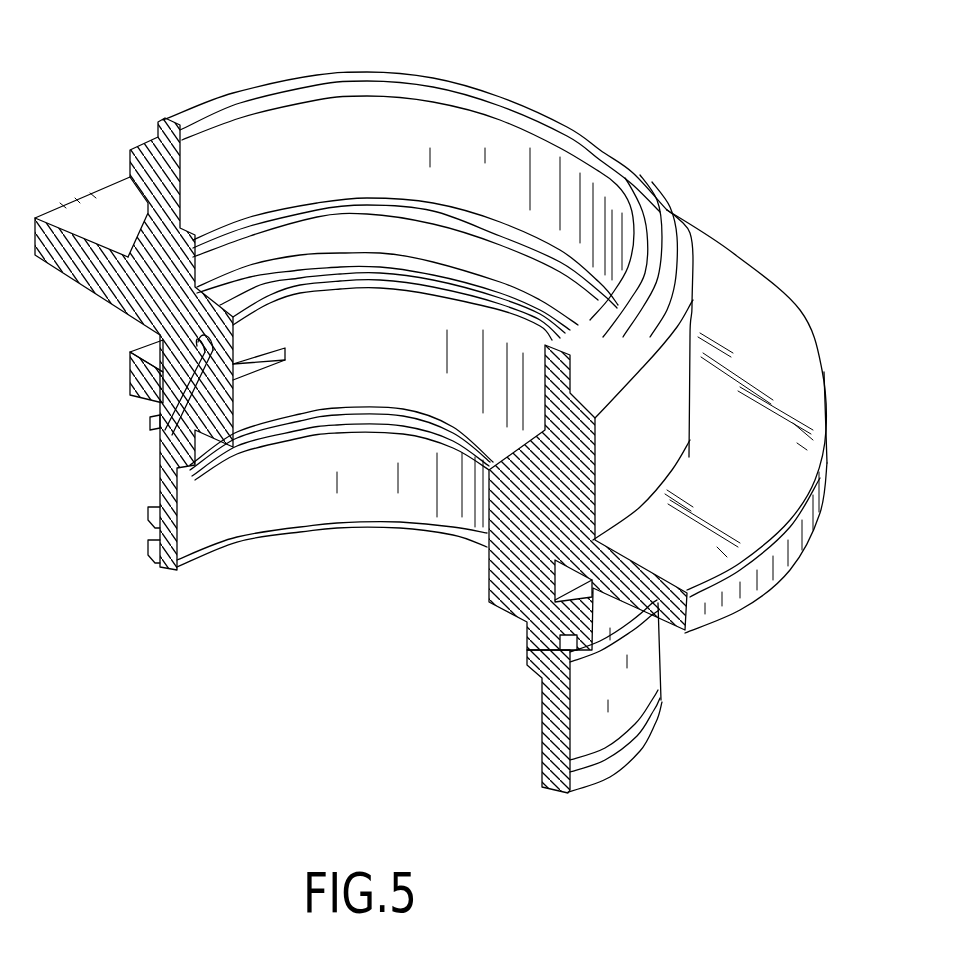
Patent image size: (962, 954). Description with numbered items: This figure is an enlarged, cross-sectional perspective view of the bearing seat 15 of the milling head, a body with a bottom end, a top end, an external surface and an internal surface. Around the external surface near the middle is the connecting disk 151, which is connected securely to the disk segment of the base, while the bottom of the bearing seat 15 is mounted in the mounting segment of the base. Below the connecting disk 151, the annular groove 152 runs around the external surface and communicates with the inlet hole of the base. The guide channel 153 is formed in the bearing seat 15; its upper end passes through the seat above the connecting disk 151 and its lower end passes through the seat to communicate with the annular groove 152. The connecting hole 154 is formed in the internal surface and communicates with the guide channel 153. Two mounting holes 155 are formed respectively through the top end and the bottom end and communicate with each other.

The bearing seat 15 is at (738, 152).
The connecting disk 151 is at (757, 317).
The annular groove 152 is at (596, 666).
The guide channel 153 is at (165, 440).
The connecting hole 154 is at (273, 367).
The mounting holes 155 is at (220, 143).